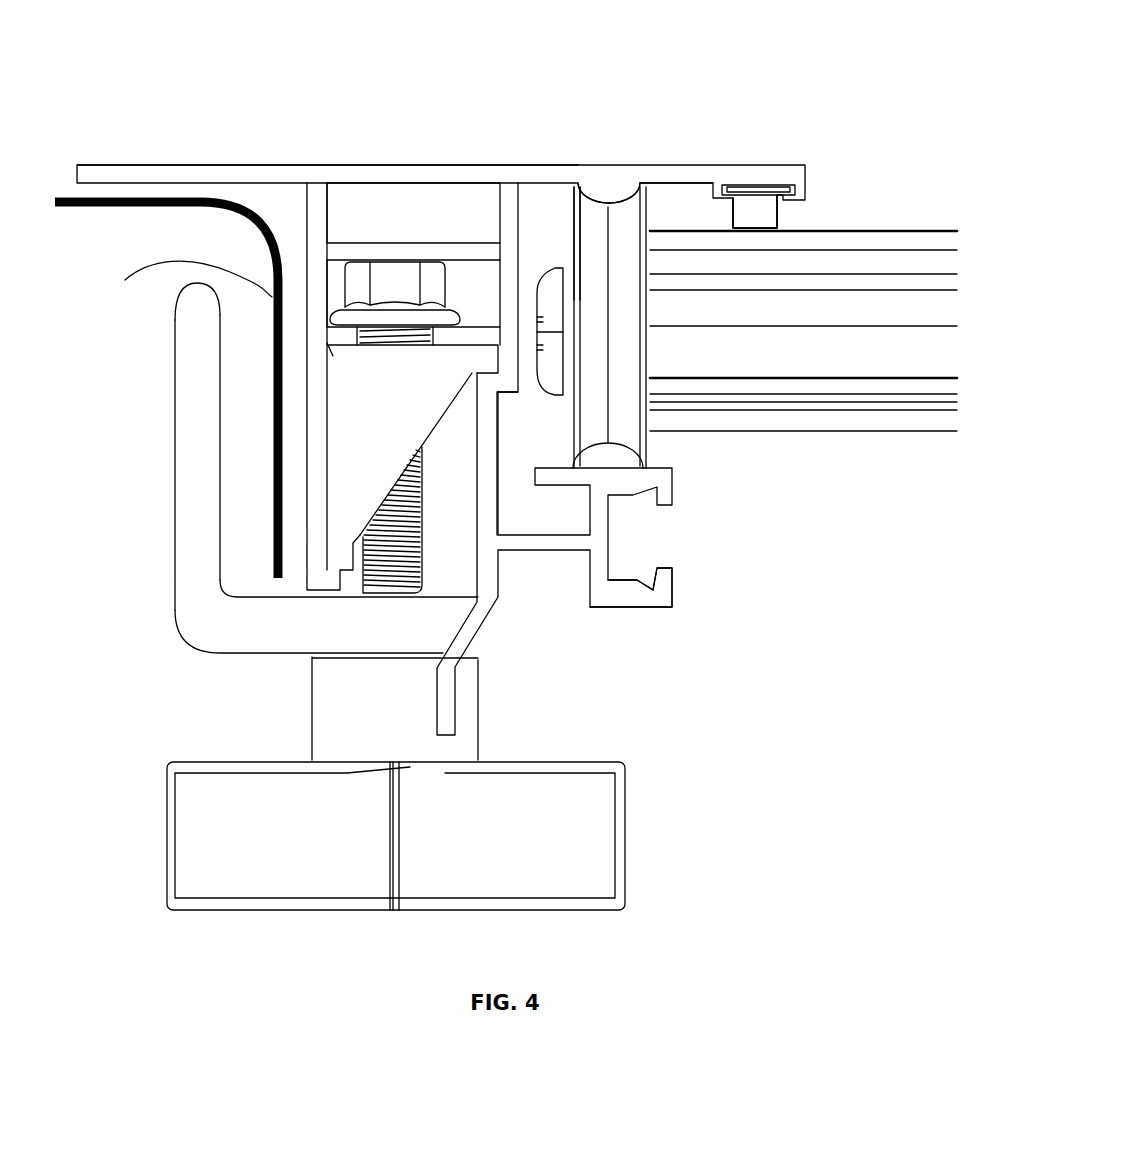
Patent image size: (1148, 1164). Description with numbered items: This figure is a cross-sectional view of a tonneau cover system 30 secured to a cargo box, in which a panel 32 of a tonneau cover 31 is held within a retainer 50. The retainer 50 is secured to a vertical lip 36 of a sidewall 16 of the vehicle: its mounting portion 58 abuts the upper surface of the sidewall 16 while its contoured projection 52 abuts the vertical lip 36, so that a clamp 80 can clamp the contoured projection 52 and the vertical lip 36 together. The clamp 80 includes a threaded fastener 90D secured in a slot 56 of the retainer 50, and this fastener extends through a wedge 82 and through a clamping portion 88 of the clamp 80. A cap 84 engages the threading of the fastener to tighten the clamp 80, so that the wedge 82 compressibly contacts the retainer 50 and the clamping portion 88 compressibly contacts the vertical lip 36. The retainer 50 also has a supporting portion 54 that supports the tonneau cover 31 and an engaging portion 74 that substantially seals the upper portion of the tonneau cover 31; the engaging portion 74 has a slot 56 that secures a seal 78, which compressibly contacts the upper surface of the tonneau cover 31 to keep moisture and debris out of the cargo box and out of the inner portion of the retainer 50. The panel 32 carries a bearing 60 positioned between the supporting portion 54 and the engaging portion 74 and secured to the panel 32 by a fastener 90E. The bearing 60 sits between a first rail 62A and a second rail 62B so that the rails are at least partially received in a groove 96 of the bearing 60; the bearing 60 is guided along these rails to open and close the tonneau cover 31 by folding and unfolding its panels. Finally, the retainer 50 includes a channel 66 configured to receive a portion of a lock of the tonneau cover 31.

The sidewall 16 is at (82, 217).
The tonneau cover system 30 is at (838, 70).
The tonneau cover 31 is at (930, 227).
The panel 32 is at (913, 257).
The vertical lip 36 is at (189, 285).
The retainer 50 is at (207, 157).
The contoured projection 52 is at (313, 457).
The supporting portion 54 is at (568, 568).
The slot 56 is at (323, 268).
The mounting portion 58 is at (120, 173).
The bearing 60 is at (595, 390).
The first rail 62A is at (612, 457).
The second rail 62B is at (608, 192).
The channel 66 is at (643, 587).
The engaging portion 74 is at (672, 173).
The seal 78 is at (768, 215).
The clamp 80 is at (163, 660).
The wedge 82 is at (365, 412).
The cap 84 is at (572, 865).
The clamping portion 88 is at (202, 546).
The threaded fastener 90D is at (397, 278).
The fastener 90E is at (552, 310).
The groove 96 is at (593, 198).